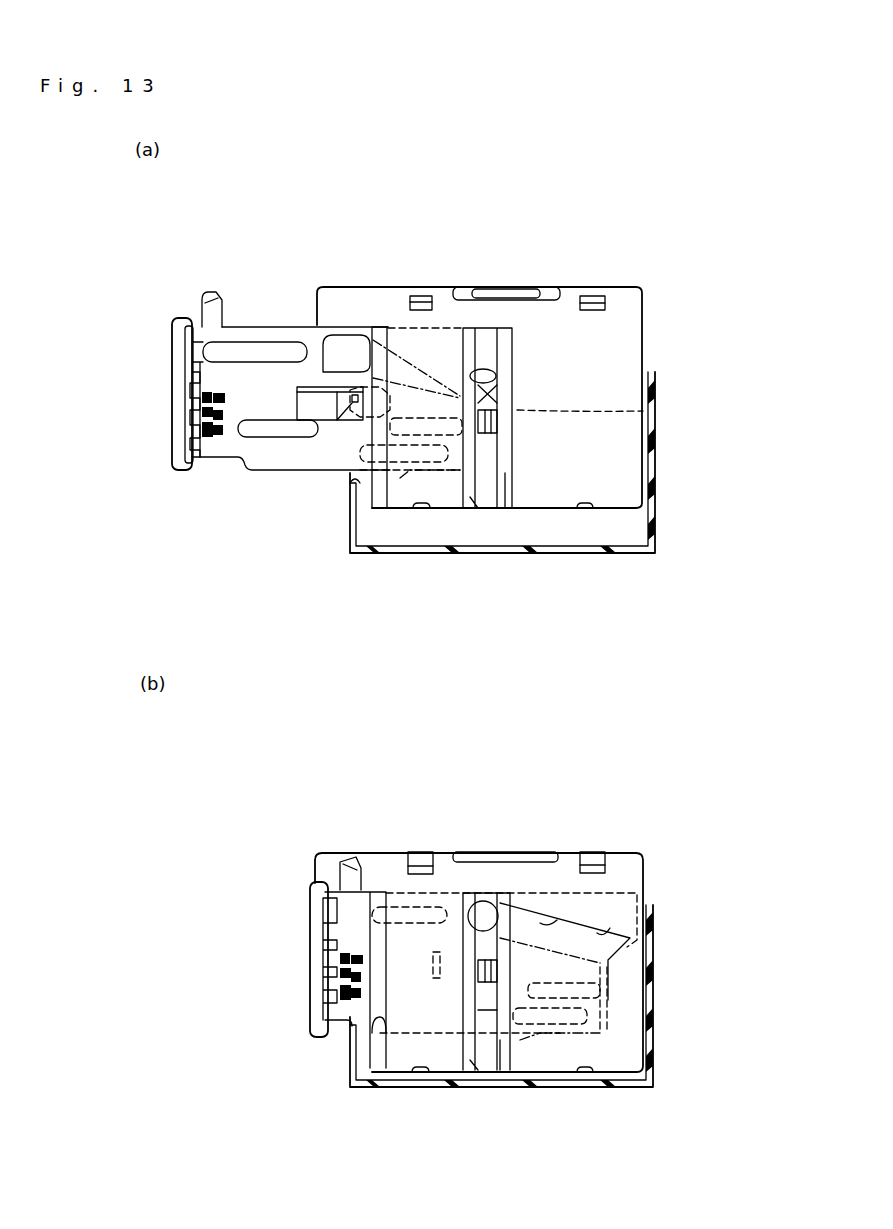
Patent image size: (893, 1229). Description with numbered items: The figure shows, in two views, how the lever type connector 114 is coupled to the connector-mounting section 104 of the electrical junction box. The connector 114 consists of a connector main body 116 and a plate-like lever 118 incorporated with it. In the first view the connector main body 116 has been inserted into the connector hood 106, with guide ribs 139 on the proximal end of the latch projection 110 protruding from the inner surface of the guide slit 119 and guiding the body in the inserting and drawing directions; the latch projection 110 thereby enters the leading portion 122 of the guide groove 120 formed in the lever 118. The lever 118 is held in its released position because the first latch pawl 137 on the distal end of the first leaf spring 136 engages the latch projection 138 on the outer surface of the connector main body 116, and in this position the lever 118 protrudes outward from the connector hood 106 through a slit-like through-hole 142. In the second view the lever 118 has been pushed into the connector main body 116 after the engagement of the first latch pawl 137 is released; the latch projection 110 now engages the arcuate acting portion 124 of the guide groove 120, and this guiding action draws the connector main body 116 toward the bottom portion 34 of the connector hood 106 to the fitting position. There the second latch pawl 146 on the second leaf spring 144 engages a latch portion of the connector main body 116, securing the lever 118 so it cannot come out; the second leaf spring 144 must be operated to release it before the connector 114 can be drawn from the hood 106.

The bottom portion 34 is at (615, 553).
The connector-mounting section 104 is at (664, 381).
The connector hood 106 is at (652, 476).
The latch projection 110 is at (643, 411).
The lever type connector 114 is at (629, 248).
The connector main body 116 is at (632, 352).
The lever 118 is at (207, 270).
The guide slit 119 is at (500, 522).
The guide groove 120 is at (431, 232).
The leading portion 122 is at (483, 384).
The acting portion 124 is at (350, 350).
The first leaf spring 136 is at (313, 410).
The first latch pawl 137 is at (340, 407).
The latch projection 138 is at (373, 403).
The guide rib 139 is at (473, 473).
The through-hole 142 is at (347, 483).
The second leaf spring 144 is at (290, 300).
The second latch pawl 146 is at (245, 297).